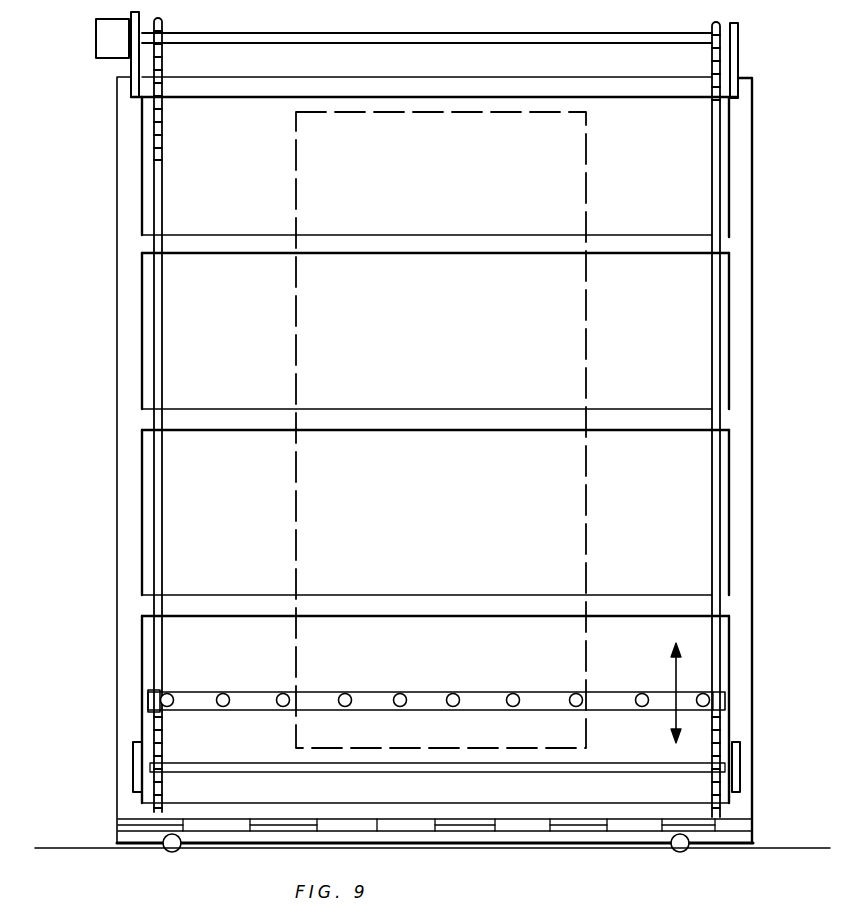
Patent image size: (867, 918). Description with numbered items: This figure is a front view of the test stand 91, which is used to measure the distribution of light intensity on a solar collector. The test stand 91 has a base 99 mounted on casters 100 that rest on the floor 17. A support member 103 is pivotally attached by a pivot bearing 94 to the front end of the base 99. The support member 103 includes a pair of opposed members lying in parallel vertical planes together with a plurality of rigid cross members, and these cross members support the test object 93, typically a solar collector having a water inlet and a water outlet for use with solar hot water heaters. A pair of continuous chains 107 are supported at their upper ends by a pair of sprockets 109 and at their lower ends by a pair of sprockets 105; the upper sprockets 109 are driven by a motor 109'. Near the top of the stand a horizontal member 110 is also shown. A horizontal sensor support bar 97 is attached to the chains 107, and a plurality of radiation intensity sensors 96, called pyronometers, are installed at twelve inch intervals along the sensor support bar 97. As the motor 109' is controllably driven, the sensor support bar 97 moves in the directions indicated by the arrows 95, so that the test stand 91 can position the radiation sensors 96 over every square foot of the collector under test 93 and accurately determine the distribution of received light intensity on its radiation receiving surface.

The floor 17 is at (52, 848).
The test stand 91 is at (758, 498).
The test object 93 is at (570, 187).
The pivot bearing 94 is at (118, 831).
The arrows 95 is at (675, 685).
The radiation intensity sensors 96 is at (222, 693).
The sensor support bar 97 is at (313, 700).
The base 99 is at (427, 840).
The casters 100 is at (167, 853).
The support member 103 is at (117, 297).
The sprockets 105 is at (165, 800).
The continuous chains 107 is at (162, 172).
The sprockets 109 is at (434, 55).
The motor 109' is at (79, 45).
The upper cross shaft 110 is at (405, 33).